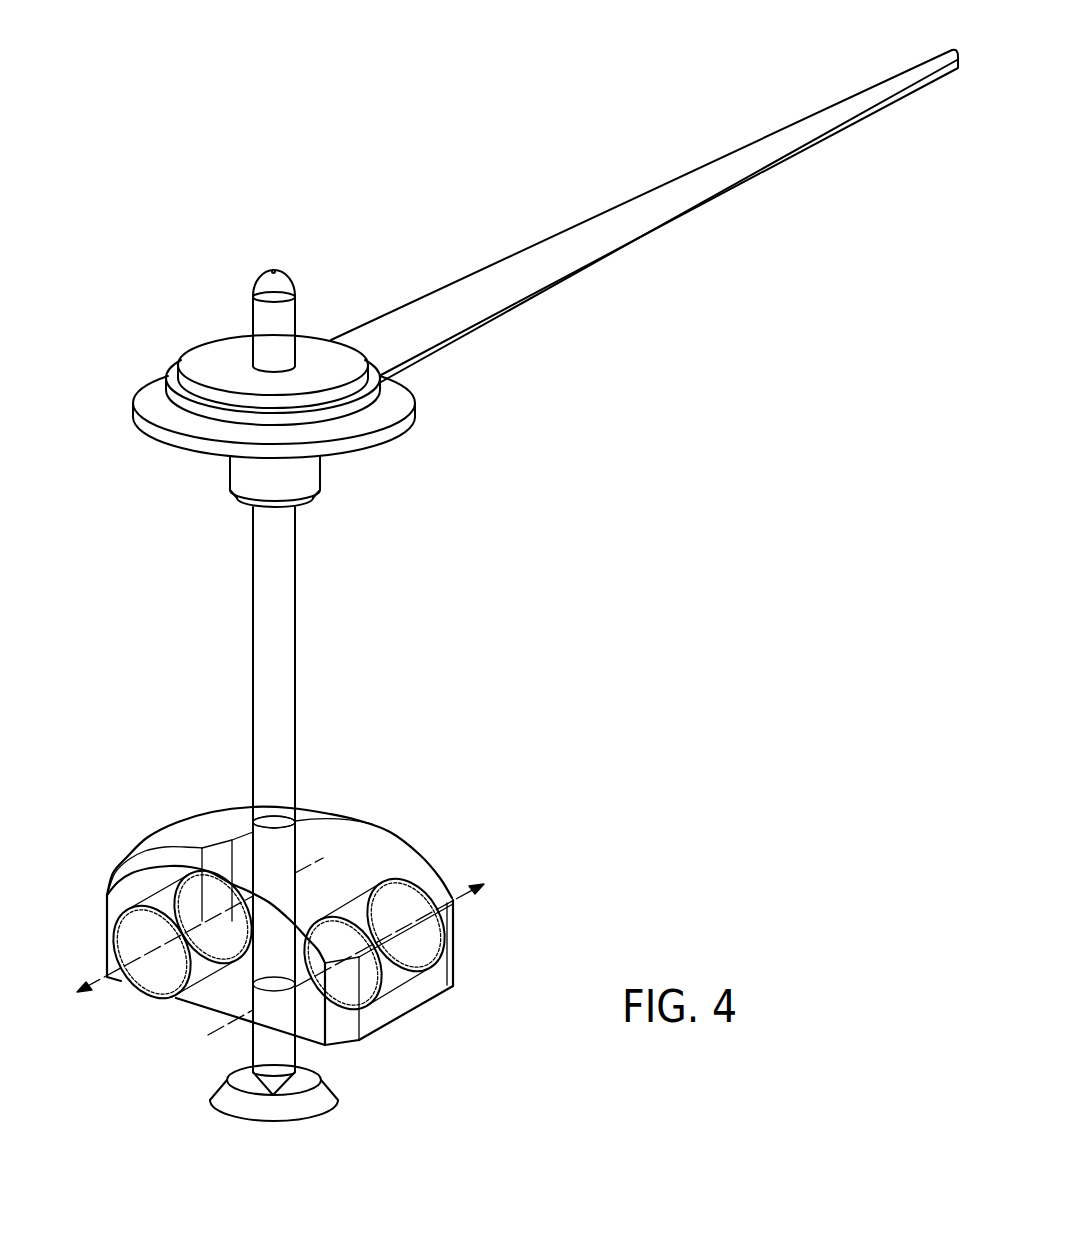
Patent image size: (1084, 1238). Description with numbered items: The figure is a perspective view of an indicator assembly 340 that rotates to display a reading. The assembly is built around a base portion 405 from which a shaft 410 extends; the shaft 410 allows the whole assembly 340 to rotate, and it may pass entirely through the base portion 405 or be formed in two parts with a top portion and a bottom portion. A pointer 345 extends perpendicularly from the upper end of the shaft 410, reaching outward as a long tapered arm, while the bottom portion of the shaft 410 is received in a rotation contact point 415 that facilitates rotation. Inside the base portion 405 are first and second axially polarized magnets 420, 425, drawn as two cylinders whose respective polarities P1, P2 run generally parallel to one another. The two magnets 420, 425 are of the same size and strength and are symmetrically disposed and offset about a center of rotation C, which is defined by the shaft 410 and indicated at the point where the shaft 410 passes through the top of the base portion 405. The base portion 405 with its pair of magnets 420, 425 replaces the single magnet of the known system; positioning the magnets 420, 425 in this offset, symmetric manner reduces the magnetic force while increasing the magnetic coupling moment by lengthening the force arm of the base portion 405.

The indicator assembly 340 is at (697, 670).
The pointer 345 is at (655, 214).
The shaft 410 is at (297, 697).
The base portion 405 is at (391, 830).
The first axially polarized magnet 420 is at (403, 895).
The second axially polarized magnet 425 is at (137, 958).
The rotation contact point 415 is at (330, 1098).
The center of rotation C is at (296, 820).
The polarity of first magnet P1 is at (363, 953).
The polarity of second magnet P2 is at (182, 935).